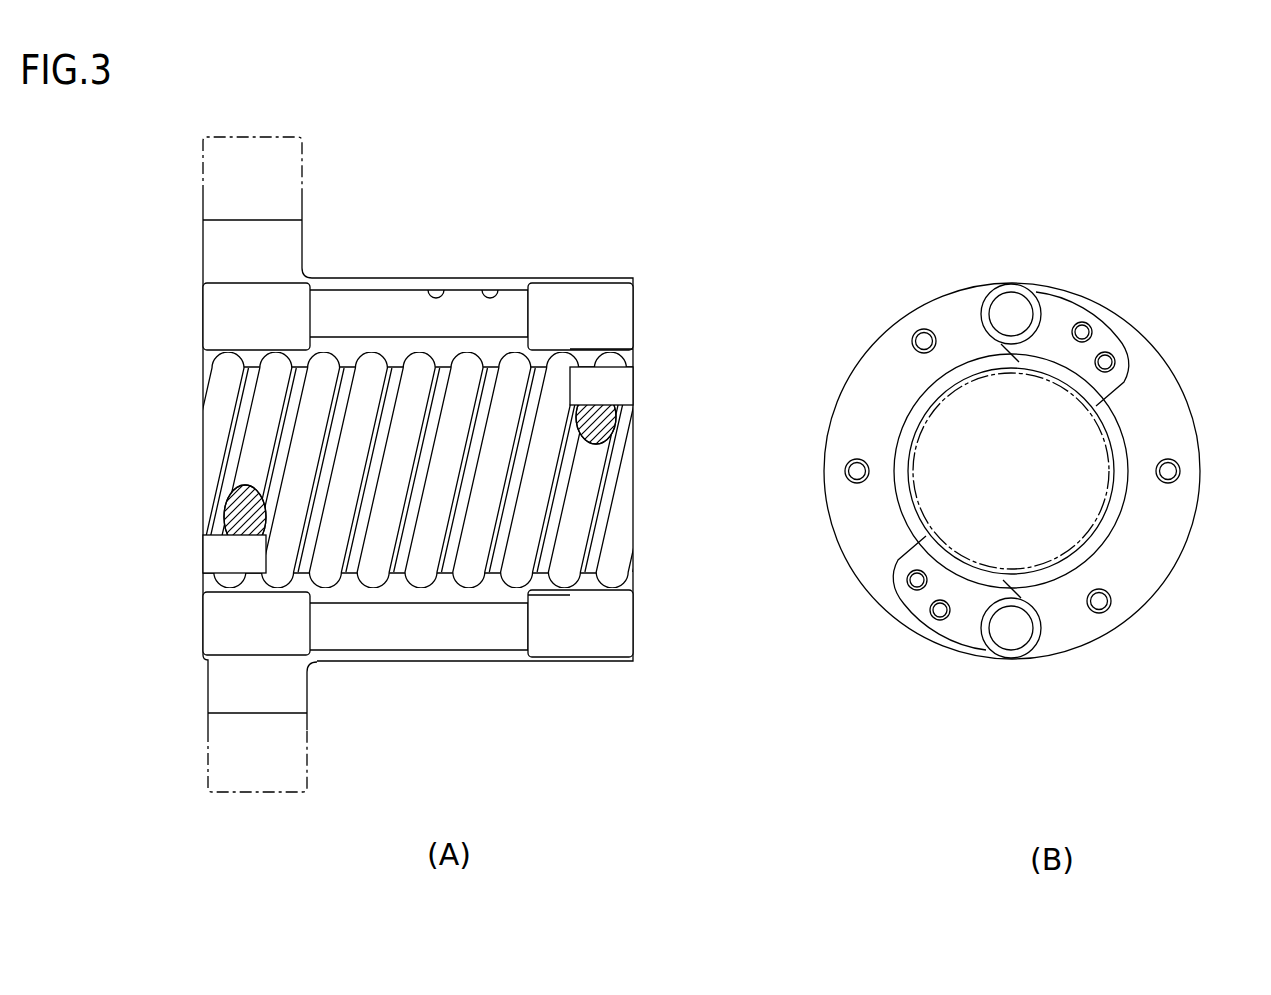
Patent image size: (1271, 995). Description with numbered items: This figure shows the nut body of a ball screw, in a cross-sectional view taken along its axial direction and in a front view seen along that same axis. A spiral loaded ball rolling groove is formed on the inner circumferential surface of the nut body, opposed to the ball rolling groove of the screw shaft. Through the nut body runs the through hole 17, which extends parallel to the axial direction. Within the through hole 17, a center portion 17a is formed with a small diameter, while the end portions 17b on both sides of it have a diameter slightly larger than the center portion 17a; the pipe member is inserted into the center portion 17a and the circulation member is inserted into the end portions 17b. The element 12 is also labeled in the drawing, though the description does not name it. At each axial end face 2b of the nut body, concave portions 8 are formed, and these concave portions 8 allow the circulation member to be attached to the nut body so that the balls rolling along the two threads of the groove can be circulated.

The concave portion 8 is at (245, 350).
The coil spring 12 is at (387, 256).
The through hole 17 is at (475, 416).
The center portion 17a is at (503, 290).
The end portion 17b is at (583, 295).
The end face 2b is at (1152, 361).